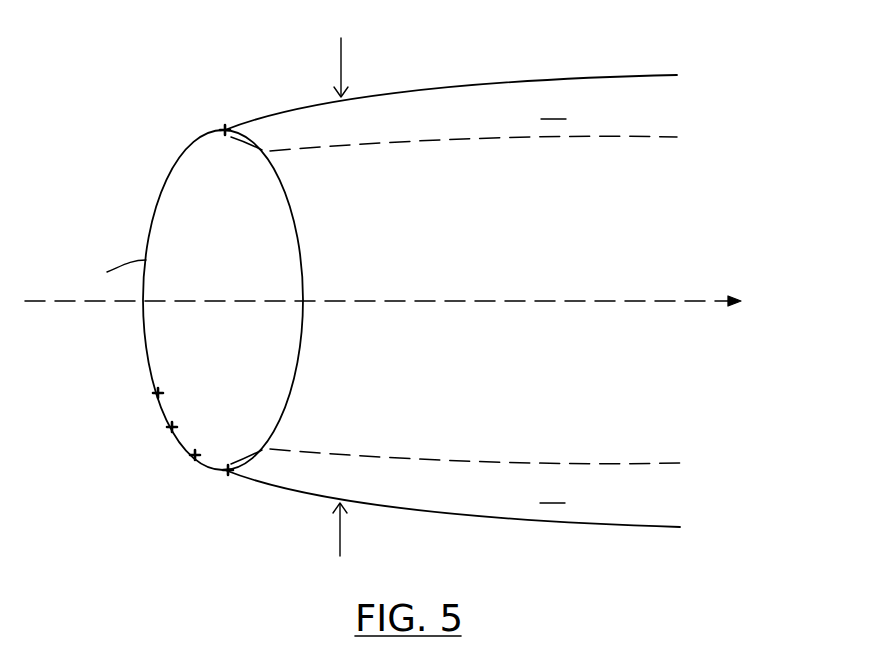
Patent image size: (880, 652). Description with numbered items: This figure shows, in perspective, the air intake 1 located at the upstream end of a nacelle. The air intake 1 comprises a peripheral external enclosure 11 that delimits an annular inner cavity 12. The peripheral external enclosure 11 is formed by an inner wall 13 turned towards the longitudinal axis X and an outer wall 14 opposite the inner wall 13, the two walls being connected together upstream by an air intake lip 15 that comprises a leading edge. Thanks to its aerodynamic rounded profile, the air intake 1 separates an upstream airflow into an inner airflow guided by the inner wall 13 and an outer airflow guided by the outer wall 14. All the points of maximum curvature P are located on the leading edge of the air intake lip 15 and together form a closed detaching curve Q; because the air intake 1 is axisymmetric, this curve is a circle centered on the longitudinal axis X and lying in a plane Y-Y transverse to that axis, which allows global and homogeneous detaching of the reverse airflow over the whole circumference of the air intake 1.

The air intake 1 is at (127, 113).
The peripheral external enclosure 11 is at (619, 63).
The annular inner cavity 12 is at (553, 301).
The inner wall 13 is at (476, 144).
The outer wall 14 is at (476, 85).
The air intake lip 15 is at (152, 220).